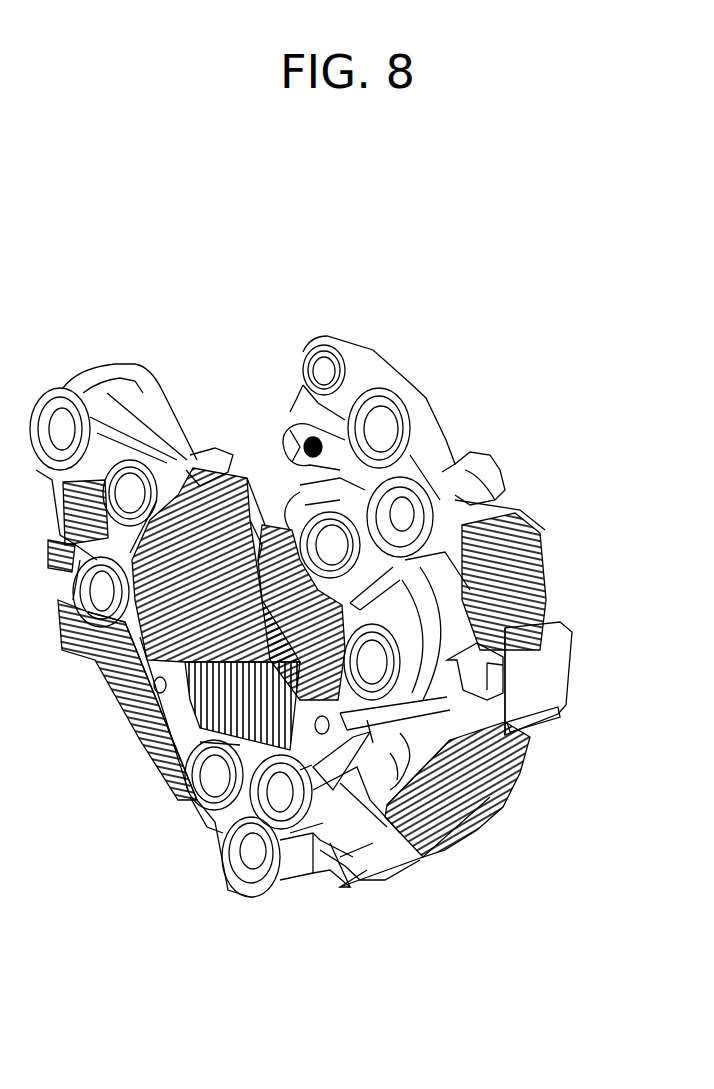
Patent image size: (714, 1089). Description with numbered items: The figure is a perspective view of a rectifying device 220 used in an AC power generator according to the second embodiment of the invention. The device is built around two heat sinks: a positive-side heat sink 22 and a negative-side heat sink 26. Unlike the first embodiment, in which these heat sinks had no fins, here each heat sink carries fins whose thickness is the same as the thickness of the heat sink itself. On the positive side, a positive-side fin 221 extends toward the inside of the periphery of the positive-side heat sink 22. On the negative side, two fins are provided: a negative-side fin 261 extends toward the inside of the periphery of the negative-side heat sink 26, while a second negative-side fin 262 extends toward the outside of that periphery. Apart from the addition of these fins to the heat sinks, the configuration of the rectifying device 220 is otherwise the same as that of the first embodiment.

The rectifying device 220 is at (98, 254).
The positive-side fin 221 is at (205, 462).
The negative-side fin 261 is at (240, 508).
The negative-side heat sink 26 is at (500, 465).
The negative-side fin 262 is at (540, 525).
The positive-side heat sink 22 is at (317, 807).